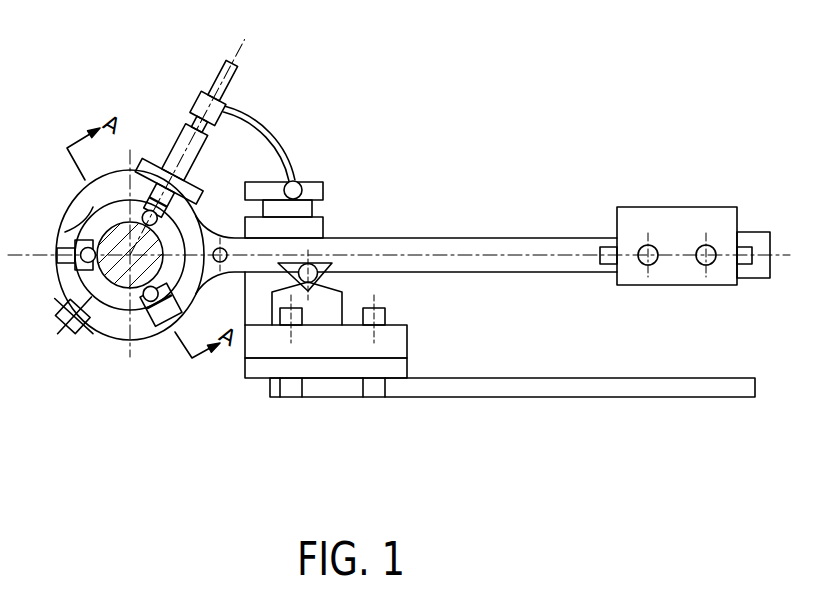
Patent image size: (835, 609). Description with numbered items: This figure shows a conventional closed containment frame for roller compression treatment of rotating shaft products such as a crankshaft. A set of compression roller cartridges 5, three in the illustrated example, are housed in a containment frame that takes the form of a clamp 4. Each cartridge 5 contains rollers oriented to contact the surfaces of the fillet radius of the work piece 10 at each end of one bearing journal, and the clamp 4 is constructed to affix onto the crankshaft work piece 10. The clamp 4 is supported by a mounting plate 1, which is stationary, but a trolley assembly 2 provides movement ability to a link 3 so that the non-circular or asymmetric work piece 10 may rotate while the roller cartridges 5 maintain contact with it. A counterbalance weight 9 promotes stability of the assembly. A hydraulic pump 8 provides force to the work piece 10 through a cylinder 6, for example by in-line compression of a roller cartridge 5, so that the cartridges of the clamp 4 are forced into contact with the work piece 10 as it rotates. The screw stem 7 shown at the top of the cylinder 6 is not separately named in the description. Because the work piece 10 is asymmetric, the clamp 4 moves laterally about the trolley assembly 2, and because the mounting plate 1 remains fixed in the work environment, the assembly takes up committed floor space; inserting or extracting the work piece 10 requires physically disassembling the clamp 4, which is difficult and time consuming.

The mounting plate 1 is at (528, 388).
The trolley assembly 2 is at (332, 300).
The link 3 is at (432, 247).
The clamp 4 is at (67, 230).
The compression roller cartridges 5 is at (187, 223).
The cylinder 6 is at (185, 130).
The screw stem 7 is at (227, 70).
The hydraulic pump 8 is at (310, 188).
The counterbalance weight 9 is at (688, 212).
The work piece 10 is at (125, 272).